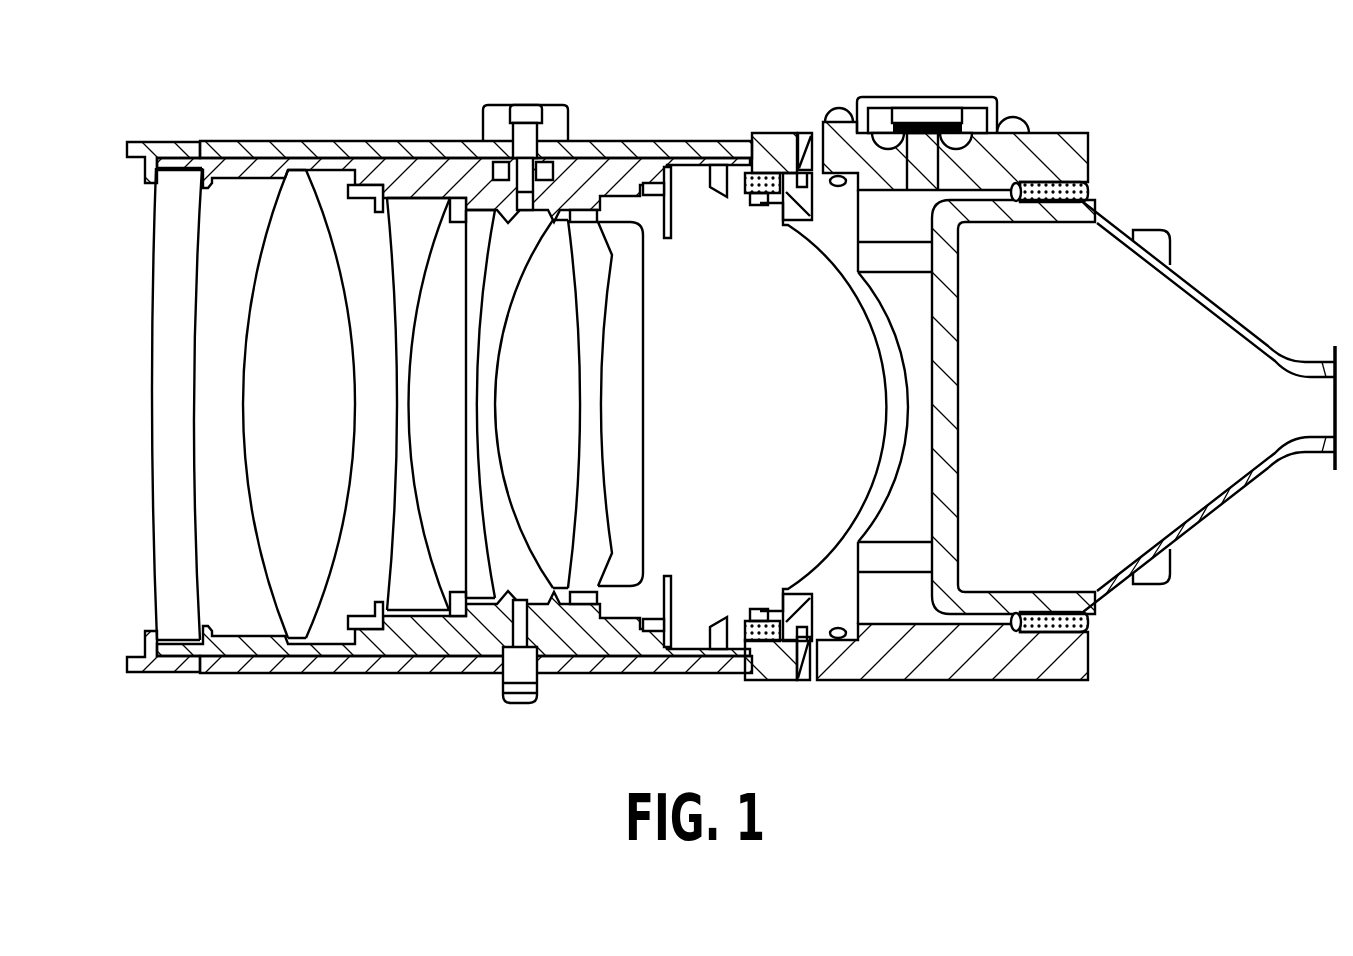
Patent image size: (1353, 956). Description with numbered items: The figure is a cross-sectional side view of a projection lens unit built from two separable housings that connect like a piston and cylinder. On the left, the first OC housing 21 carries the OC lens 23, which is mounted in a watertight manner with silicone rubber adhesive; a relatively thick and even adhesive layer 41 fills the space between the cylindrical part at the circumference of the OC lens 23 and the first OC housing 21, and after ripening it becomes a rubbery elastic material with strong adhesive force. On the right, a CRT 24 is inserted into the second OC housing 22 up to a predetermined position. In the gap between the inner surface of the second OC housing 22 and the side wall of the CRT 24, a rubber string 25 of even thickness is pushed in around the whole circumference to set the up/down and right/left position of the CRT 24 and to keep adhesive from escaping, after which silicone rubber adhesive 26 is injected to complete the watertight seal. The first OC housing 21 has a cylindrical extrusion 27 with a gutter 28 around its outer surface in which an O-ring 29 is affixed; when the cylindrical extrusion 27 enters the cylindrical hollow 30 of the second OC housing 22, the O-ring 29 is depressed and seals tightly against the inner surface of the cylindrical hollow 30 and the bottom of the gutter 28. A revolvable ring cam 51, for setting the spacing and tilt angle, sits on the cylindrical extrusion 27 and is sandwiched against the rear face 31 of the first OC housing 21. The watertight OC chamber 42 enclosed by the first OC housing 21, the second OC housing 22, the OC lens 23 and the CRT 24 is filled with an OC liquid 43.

The first OC housing 21 is at (763, 133).
The second OC housing 22 is at (1050, 133).
The OC lens 23 is at (847, 287).
The CRT 24 is at (1117, 215).
The rubber string 25 is at (1020, 186).
The silicone rubber adhesive 26 is at (1075, 187).
The cylindrical extrusion 27 is at (802, 143).
The gutter 28 is at (800, 204).
The O-ring 29 is at (838, 110).
The cylindrical hollow 30 is at (848, 638).
The rear face 31 is at (767, 684).
The adhesive layer 41 is at (747, 197).
The OC chamber 42 is at (912, 325).
The OC liquid 43 is at (905, 492).
The ring cam 51 is at (801, 667).